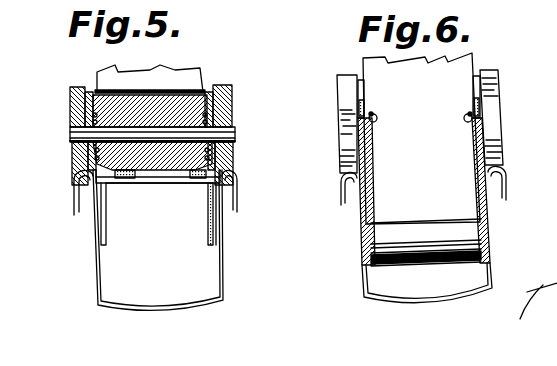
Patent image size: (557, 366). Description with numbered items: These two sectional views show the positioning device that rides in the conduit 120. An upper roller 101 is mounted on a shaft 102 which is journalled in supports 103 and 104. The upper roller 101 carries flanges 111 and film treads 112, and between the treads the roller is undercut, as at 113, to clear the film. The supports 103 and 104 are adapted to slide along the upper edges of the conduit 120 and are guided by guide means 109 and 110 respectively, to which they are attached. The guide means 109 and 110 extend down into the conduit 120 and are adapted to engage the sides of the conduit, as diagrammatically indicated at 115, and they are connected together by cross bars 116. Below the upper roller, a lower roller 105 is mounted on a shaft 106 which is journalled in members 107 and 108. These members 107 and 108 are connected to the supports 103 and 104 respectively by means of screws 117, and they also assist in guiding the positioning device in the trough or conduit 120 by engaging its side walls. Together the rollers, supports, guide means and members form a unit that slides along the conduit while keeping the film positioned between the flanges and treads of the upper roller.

In FIG. 5, the upper roller 101 is at (236, 156).
In FIG. 5, the shaft 102 is at (74, 150).
In FIG. 5, the support 103 is at (70, 113).
In FIG. 6, the support 103 is at (346, 108).
In FIG. 5, the support 104 is at (232, 93).
In FIG. 6, the support 104 is at (500, 91).
In FIG. 6, the lower roller 105 is at (466, 244).
In FIG. 6, the shaft 106 is at (483, 240).
In FIG. 6, the member 107 is at (360, 211).
In FIG. 6, the member 108 is at (492, 205).
In FIG. 5, the guide means 109 is at (101, 233).
In FIG. 5, the guide means 110 is at (208, 227).
In FIG. 5, the flanges 111 is at (89, 92).
In FIG. 5, the film treads 112 is at (203, 90).
In FIG. 5, the undercut 113 is at (155, 112).
In FIG. 5, the engagement of guide means with conduit sides 115 is at (223, 232).
In FIG. 5, the cross bars 116 is at (150, 178).
In FIG. 6, the screws 117 is at (464, 120).
In FIG. 5, the conduit 120 is at (224, 274).
In FIG. 6, the conduit 120 is at (492, 271).